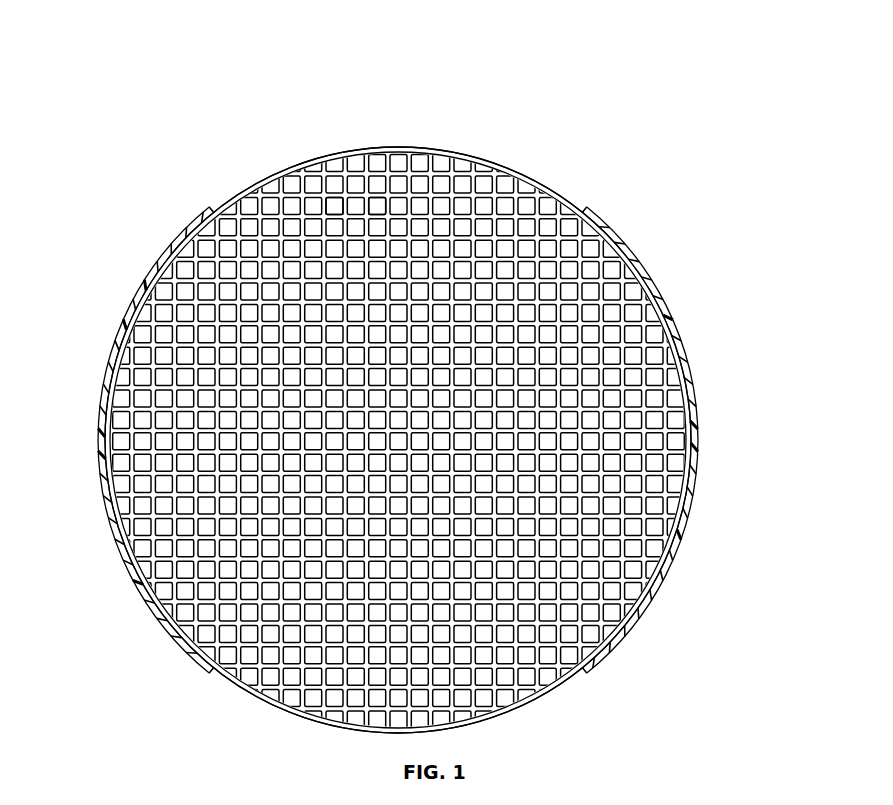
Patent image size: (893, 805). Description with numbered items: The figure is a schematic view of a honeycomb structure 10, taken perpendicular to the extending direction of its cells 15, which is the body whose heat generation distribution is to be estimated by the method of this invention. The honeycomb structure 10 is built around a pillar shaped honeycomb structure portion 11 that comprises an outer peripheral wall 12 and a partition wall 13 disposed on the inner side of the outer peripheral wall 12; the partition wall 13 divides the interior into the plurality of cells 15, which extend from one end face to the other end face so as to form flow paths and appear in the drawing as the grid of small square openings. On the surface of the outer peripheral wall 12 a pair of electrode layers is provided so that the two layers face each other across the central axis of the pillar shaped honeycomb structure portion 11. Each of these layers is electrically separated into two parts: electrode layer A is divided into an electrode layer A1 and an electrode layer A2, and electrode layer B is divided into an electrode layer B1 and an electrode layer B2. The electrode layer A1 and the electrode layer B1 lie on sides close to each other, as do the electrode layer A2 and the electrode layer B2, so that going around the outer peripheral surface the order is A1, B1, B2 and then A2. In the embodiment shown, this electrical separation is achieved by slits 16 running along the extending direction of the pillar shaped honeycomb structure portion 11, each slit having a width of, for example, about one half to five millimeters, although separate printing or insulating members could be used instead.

The honeycomb structure 10 is at (404, 103).
The pillar shaped honeycomb structure portion 11 is at (542, 188).
The outer peripheral wall 12 is at (260, 188).
The partition wall 13 is at (324, 196).
The cells 15 is at (382, 203).
The slits 16 is at (102, 457).
The electrode layer A1 is at (174, 643).
The electrode layer A2 is at (177, 243).
The electrode layer B1 is at (626, 640).
The electrode layer B2 is at (622, 239).